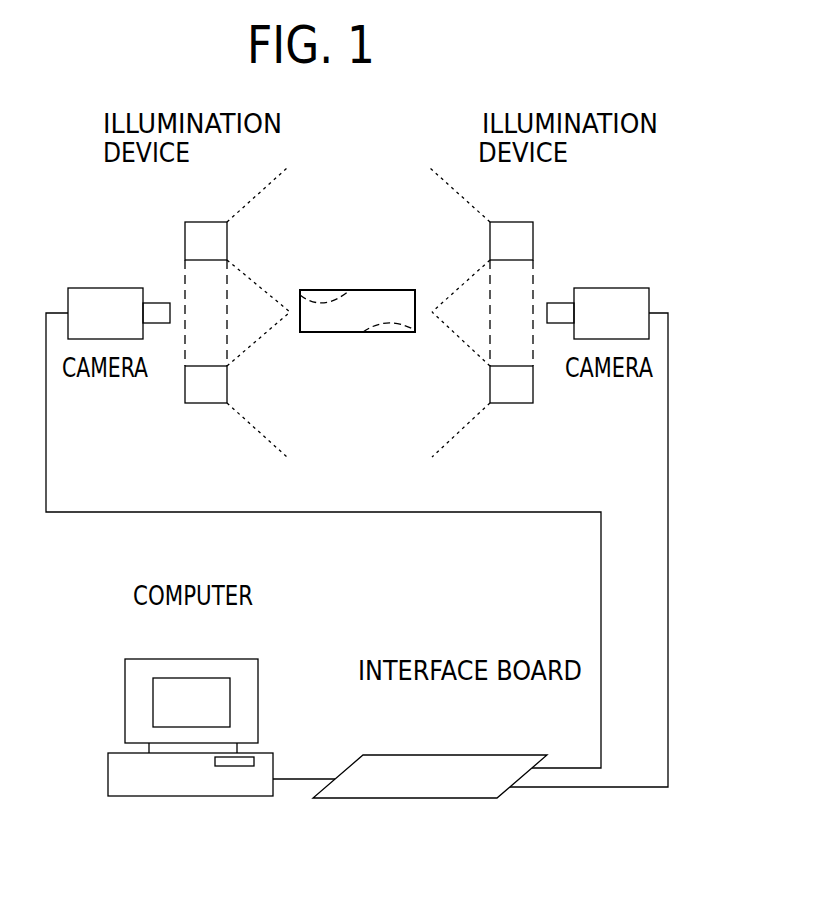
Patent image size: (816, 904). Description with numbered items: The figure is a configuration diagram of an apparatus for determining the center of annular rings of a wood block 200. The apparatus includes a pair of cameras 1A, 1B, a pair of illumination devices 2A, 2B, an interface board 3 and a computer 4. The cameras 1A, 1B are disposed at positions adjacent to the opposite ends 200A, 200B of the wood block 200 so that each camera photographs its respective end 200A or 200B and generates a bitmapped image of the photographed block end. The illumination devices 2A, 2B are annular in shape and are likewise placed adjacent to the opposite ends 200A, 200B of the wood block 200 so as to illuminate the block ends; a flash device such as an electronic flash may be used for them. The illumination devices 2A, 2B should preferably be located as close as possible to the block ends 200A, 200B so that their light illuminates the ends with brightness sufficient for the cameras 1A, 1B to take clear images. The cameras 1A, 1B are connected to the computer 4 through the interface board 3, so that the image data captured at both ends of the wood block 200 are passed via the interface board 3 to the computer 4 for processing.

The camera 1A is at (113, 288).
The camera 1B is at (597, 288).
The illumination device 2A is at (210, 222).
The illumination device 2B is at (510, 222).
The wood block 200 is at (351, 323).
The end of wood block 200A is at (300, 315).
The end of wood block 200B is at (417, 308).
The interface board 3 is at (425, 755).
The computer 4 is at (173, 658).